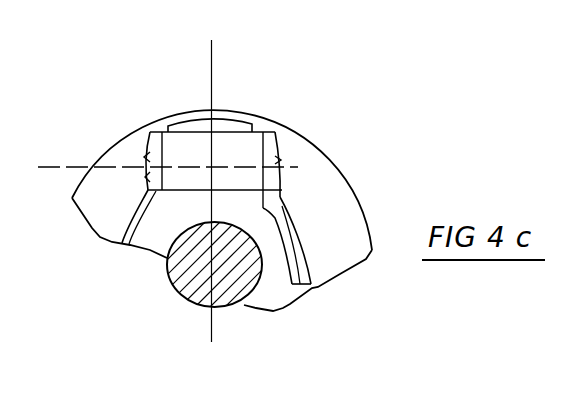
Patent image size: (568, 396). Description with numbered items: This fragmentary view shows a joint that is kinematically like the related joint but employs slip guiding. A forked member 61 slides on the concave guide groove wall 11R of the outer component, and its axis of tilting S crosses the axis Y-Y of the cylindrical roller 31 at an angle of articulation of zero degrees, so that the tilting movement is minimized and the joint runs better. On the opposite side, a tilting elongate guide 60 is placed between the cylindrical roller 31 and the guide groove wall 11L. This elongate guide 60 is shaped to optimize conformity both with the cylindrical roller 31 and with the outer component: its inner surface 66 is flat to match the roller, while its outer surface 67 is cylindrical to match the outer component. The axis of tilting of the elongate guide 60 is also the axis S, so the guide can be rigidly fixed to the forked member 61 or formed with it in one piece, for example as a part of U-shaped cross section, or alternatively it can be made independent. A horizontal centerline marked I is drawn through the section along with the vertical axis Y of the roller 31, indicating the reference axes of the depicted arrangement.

The tilting elongate guide 60 is at (152, 155).
The cylindrical roller 31 is at (170, 147).
The outer surface 67 is at (143, 153).
The guide groove wall 11L is at (150, 177).
The concave guide groove wall 11R is at (278, 158).
The forked member 61 is at (272, 153).
The inner surface 66 is at (165, 192).
The axis of tilting S is at (215, 163).
The horizontal axis I is at (162, 166).
The axis of the rollers Y is at (210, 191).